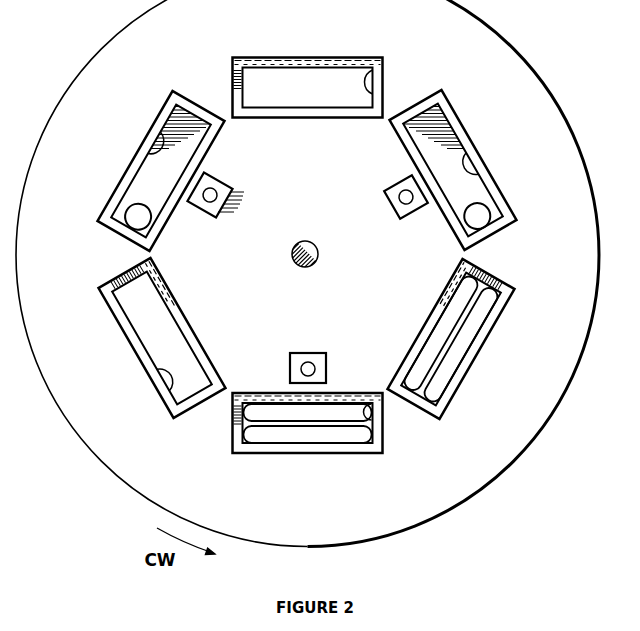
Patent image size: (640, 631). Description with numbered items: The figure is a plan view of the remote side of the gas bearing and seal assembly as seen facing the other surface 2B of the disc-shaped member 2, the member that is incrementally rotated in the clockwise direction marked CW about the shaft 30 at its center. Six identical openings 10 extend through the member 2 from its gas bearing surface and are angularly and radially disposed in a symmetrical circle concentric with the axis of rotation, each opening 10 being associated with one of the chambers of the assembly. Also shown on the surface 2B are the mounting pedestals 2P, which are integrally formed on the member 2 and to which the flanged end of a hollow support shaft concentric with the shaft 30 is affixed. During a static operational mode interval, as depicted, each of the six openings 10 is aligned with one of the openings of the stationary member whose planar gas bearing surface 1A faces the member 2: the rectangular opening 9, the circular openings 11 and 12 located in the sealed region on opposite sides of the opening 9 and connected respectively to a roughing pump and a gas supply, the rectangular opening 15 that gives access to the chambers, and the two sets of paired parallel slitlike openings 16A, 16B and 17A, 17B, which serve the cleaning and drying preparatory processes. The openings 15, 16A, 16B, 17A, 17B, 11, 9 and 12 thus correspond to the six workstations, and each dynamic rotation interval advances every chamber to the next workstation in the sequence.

The member 2 is at (543, 81).
The other surface 2B is at (280, 23).
The opening 9 is at (297, 95).
The openings 10 is at (367, 82).
The circular opening 11 is at (480, 217).
The circular opening 12 is at (137, 222).
The opening 15 is at (135, 320).
The planar gas bearing surface 1A is at (448, 198).
The mounting pedestals 2P is at (218, 198).
The shaft 30 is at (318, 241).
The slitlike opening 16A is at (307, 435).
The slitlike opening 16B is at (325, 408).
The slitlike opening 17A is at (463, 345).
The slitlike opening 17B is at (420, 365).